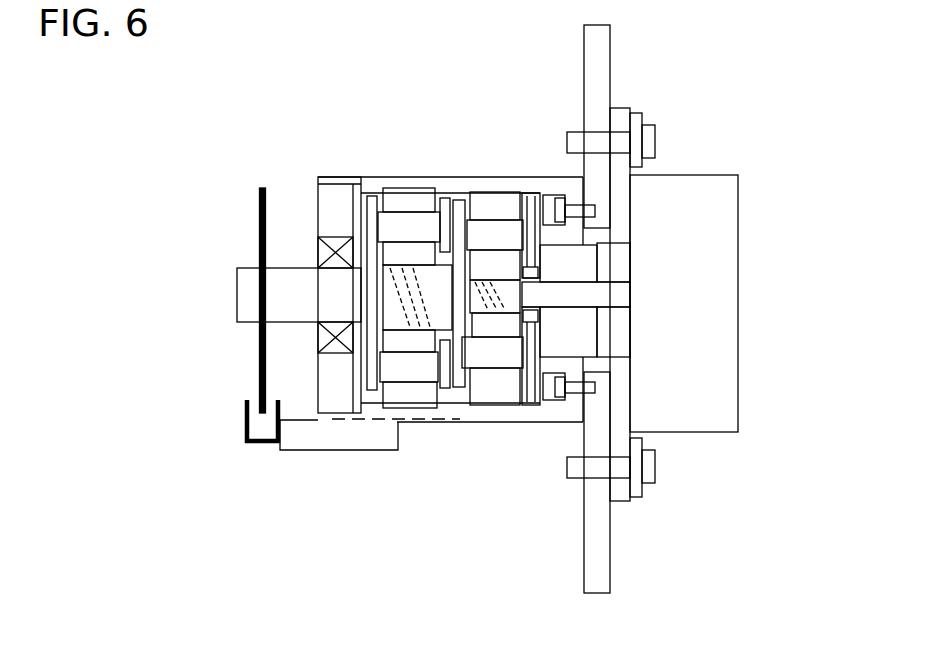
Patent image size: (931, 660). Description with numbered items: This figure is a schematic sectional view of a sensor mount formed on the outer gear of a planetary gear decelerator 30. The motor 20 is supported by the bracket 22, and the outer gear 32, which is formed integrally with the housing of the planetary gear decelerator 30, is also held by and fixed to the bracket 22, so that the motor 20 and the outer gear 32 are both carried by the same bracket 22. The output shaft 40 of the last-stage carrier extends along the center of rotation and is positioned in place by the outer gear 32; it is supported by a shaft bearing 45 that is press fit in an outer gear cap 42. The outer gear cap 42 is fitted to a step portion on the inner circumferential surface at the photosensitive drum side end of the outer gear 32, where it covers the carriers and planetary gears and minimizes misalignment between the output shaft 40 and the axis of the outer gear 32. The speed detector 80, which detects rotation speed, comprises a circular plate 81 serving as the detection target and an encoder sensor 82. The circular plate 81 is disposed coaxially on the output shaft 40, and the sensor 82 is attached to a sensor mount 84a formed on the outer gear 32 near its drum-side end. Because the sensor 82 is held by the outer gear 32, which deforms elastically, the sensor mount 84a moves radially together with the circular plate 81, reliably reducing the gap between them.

The motor 20 is at (740, 212).
The bracket 22 is at (584, 54).
The planetary gear decelerator 30 is at (455, 488).
The outer gear 32 is at (537, 176).
The output shaft 40 is at (237, 290).
The outer gear cap 42 is at (316, 198).
The shaft bearing 45 is at (340, 236).
The speed detector 80 is at (275, 342).
The circular plate 81 is at (258, 202).
The sensor 82 is at (244, 421).
The sensor mount 84a is at (355, 452).